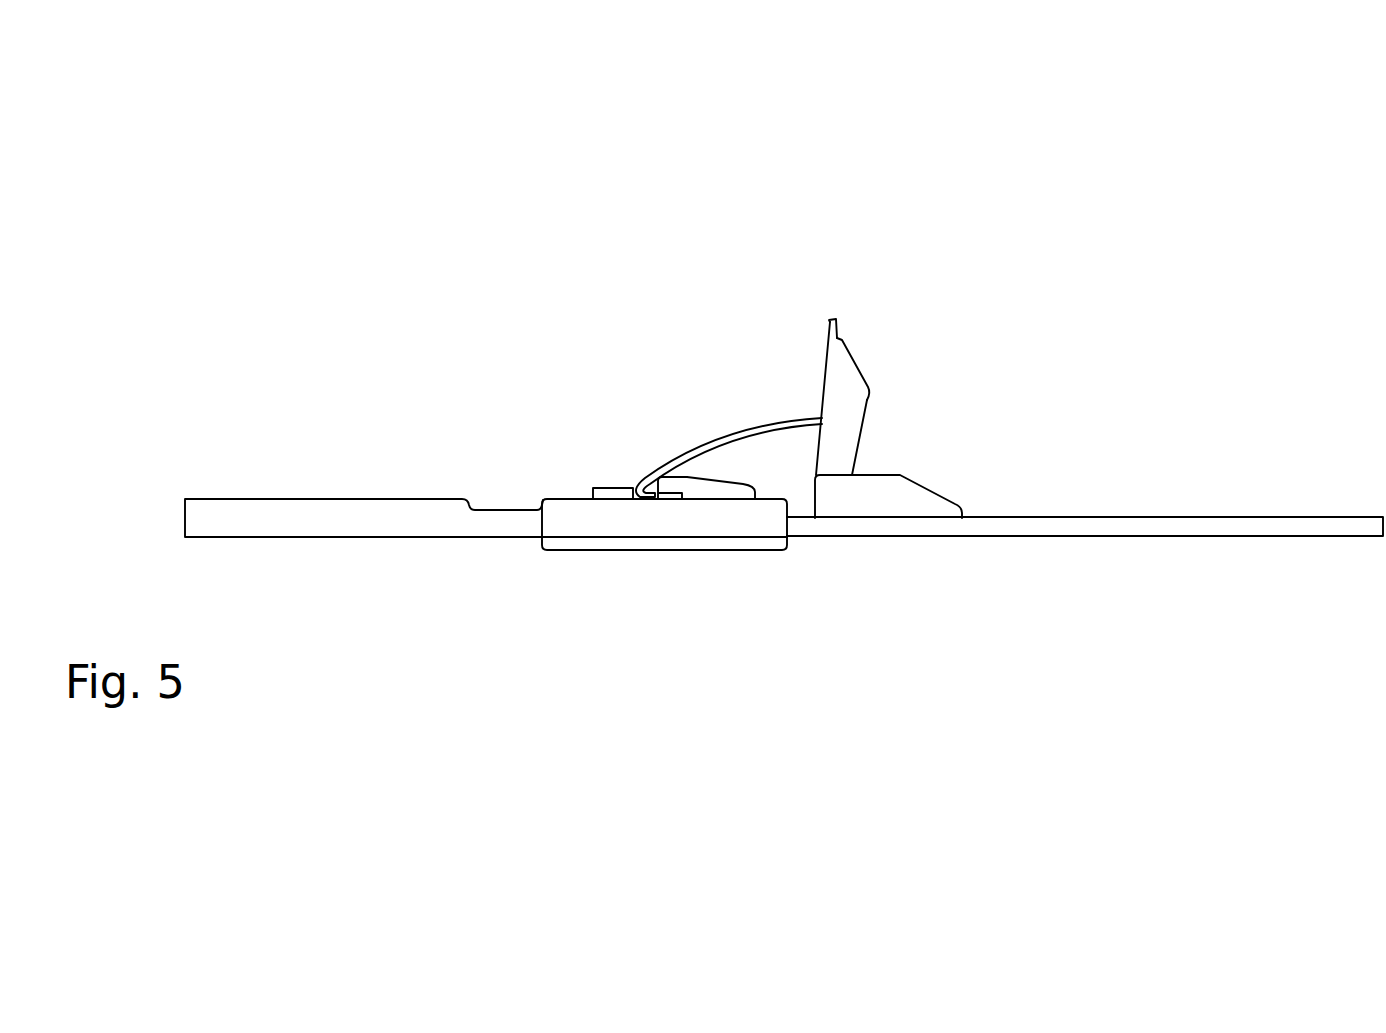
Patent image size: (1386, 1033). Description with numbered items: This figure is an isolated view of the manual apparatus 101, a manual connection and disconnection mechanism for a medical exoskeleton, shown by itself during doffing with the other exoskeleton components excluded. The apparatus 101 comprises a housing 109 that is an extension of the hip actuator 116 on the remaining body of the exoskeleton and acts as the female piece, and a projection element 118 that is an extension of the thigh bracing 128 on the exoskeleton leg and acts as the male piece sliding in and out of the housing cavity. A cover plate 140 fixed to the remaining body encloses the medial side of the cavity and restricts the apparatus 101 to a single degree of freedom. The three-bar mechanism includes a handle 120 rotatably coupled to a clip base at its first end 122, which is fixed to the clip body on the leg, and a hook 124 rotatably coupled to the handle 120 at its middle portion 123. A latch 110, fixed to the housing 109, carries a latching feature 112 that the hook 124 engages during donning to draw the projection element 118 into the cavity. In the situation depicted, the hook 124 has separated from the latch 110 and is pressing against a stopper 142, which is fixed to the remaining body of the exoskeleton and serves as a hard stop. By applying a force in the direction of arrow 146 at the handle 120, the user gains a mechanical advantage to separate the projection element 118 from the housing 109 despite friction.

The manual apparatus 101 is at (648, 211).
The housing 109 is at (745, 518).
The latch 110 is at (733, 482).
The latching feature 112 is at (672, 483).
The hip actuator 116 is at (283, 500).
The projection element 118 is at (790, 528).
The handle 120 is at (838, 318).
The first end 122 is at (915, 482).
The middle portion 123 is at (829, 424).
The hook 124 is at (635, 483).
The thigh bracing 128 is at (1215, 537).
The cover plate 140 is at (693, 550).
The stopper 142 is at (593, 488).
The arrow 146 is at (850, 318).